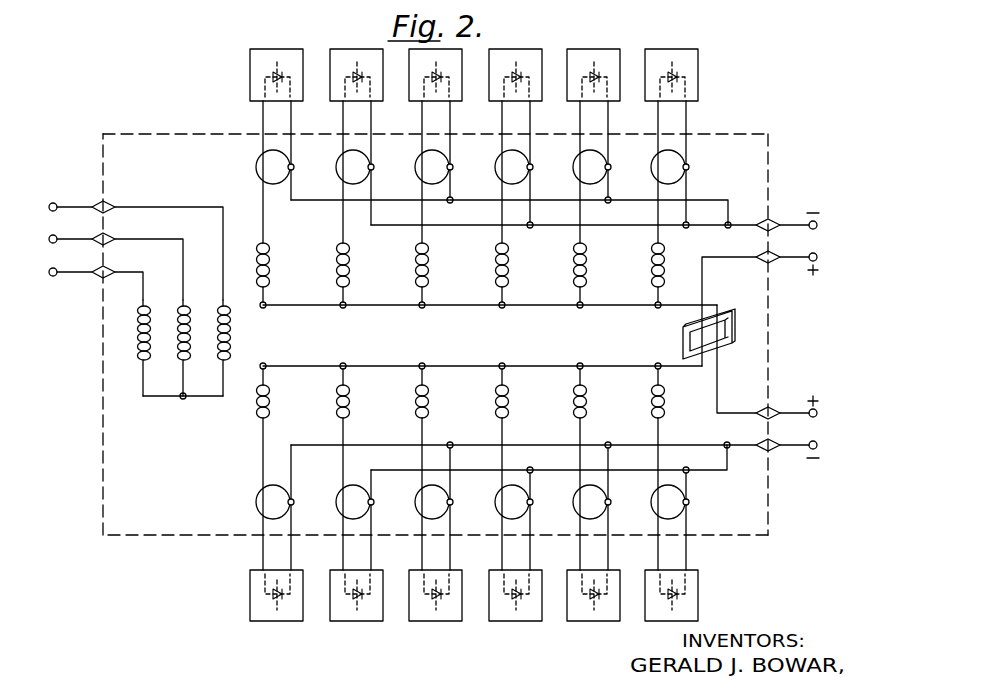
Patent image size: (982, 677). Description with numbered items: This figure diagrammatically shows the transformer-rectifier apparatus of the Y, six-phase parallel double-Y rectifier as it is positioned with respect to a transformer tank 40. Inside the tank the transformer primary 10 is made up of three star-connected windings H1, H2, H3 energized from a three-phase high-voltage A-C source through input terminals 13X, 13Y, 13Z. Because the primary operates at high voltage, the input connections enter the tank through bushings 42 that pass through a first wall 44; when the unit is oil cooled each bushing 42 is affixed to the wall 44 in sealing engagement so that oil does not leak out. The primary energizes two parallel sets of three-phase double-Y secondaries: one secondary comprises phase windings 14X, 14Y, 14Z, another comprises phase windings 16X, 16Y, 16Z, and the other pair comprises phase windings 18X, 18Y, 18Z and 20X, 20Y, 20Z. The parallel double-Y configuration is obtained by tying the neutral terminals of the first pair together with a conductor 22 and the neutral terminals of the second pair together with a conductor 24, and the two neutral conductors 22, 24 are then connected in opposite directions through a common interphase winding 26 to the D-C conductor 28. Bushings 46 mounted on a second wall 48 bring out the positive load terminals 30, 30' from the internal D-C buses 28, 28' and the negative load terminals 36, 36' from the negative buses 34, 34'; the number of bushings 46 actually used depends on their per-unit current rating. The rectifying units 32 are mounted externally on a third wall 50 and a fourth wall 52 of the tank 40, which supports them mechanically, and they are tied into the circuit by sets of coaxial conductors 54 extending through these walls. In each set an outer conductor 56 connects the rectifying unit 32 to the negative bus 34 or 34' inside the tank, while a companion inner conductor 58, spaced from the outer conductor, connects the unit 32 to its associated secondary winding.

The primary 10 is at (193, 418).
The input terminal 13X is at (81, 282).
The input terminal 13Y is at (101, 265).
The input terminal 13Z is at (121, 249).
The star-connected winding H1 is at (138, 349).
The star-connected winding H2 is at (178, 349).
The star-connected winding H3 is at (218, 349).
The phase winding 14X is at (587, 264).
The phase winding 14Y is at (270, 264).
The phase winding 14Z is at (429, 264).
The phase winding 16X is at (665, 264).
The phase winding 16Y is at (350, 264).
The phase winding 16Z is at (509, 264).
The phase winding 18X is at (270, 404).
The phase winding 18Y is at (429, 404).
The phase winding 18Z is at (587, 404).
The phase winding 20X is at (350, 404).
The phase winding 20Y is at (509, 404).
The phase winding 20Z is at (665, 404).
The conductor 22 is at (398, 307).
The conductor 24 is at (548, 365).
The interphase winding 26 is at (733, 327).
The D-C conductor 28 is at (729, 311).
The D-C bus 28' is at (736, 359).
The load terminal 30 is at (811, 261).
The load terminal 30' is at (813, 409).
The rectifying unit 32 is at (250, 77).
The negative bus 34 is at (564, 204).
The negative bus 34' is at (523, 468).
The load terminal 36 is at (811, 224).
The load terminal 36' is at (813, 447).
The transformer tank 40 is at (196, 160).
The bushing 42 is at (110, 205).
The first wall 44 is at (103, 431).
The bushing 46 is at (763, 232).
The second wall 48 is at (770, 340).
The third wall 50 is at (723, 133).
The fourth wall 52 is at (722, 537).
The coaxial conductors 54 is at (259, 512).
The outer conductor 56 is at (291, 467).
The inner conductor 58 is at (263, 468).